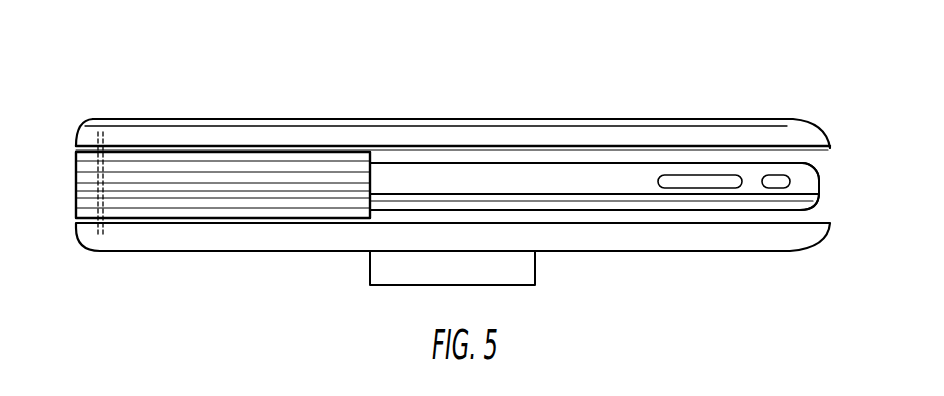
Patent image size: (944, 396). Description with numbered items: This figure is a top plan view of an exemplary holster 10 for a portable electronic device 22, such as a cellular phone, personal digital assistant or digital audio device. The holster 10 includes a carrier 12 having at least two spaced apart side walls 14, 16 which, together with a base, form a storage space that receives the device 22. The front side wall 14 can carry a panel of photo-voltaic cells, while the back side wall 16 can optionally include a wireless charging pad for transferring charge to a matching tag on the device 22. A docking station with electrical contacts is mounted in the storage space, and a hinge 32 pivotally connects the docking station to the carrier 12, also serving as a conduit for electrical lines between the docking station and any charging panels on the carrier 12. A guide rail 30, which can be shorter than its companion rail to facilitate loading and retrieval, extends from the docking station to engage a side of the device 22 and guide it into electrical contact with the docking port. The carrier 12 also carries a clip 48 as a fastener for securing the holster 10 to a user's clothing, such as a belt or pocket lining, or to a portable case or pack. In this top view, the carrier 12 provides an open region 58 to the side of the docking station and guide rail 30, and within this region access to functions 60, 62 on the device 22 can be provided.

The holster 10 is at (607, 100).
The carrier 12 is at (115, 120).
The front side wall 14 is at (253, 142).
The back side wall 16 is at (275, 240).
The portable electronic device 22 is at (410, 182).
The guide rail 30 is at (297, 185).
The hinge 32 is at (102, 158).
The clip 48 is at (522, 270).
The open region 58 is at (832, 185).
The function 60 is at (678, 178).
The function 62 is at (773, 178).